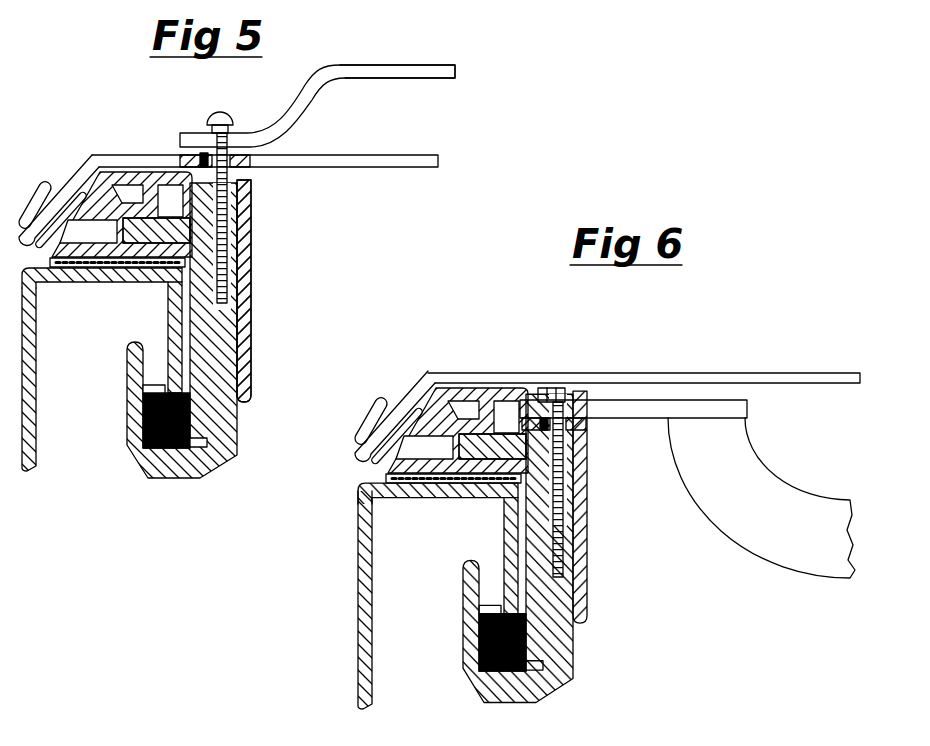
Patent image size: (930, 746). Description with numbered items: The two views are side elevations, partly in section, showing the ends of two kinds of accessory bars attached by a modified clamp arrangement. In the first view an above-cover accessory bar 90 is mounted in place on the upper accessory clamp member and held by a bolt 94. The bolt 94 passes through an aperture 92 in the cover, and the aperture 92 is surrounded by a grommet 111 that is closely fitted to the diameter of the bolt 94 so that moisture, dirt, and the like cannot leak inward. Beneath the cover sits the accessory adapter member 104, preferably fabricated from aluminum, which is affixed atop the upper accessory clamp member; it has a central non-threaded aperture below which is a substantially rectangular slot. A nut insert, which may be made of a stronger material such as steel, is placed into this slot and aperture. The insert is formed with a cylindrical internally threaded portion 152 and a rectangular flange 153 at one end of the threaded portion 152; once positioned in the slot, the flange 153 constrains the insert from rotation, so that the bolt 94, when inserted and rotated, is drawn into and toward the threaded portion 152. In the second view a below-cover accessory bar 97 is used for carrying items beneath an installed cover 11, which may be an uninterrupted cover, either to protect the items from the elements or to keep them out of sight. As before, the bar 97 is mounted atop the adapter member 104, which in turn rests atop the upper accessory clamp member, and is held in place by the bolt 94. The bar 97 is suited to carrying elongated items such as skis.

In FIG. 5, the above-cover accessory bar 90 is at (342, 64).
In FIG. 5, the bolt 94 is at (220, 112).
In FIG. 6, the bolt 94 is at (553, 388).
In FIG. 5, the cylindrical internally threaded portion 152 is at (200, 163).
In FIG. 6, the cylindrical internally threaded portion 152 is at (535, 400).
In FIG. 5, the grommet 111 is at (258, 152).
In FIG. 5, the aperture 92 is at (250, 175).
In FIG. 5, the accessory adapter member 104 is at (250, 209).
In FIG. 6, the accessory adapter member 104 is at (590, 427).
In FIG. 5, the rectangular flange 153 is at (250, 232).
In FIG. 6, the rectangular flange 153 is at (588, 442).
In FIG. 6, the cover 11 is at (632, 373).
In FIG. 6, the below-cover accessory bar 97 is at (752, 484).